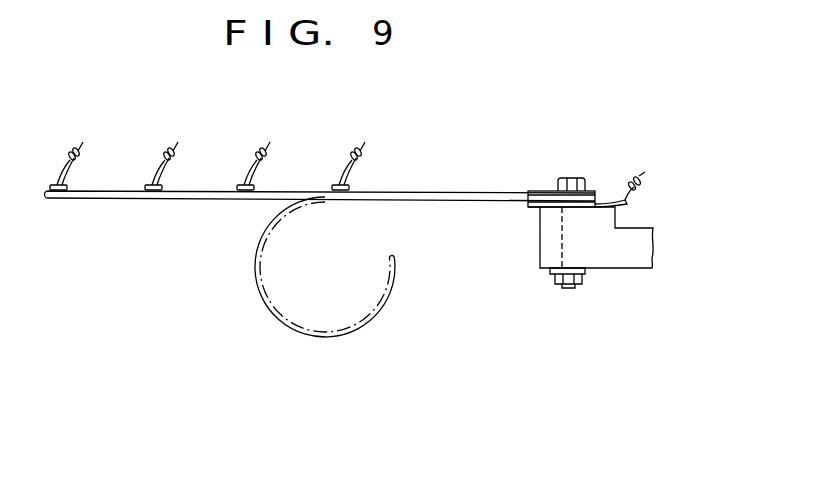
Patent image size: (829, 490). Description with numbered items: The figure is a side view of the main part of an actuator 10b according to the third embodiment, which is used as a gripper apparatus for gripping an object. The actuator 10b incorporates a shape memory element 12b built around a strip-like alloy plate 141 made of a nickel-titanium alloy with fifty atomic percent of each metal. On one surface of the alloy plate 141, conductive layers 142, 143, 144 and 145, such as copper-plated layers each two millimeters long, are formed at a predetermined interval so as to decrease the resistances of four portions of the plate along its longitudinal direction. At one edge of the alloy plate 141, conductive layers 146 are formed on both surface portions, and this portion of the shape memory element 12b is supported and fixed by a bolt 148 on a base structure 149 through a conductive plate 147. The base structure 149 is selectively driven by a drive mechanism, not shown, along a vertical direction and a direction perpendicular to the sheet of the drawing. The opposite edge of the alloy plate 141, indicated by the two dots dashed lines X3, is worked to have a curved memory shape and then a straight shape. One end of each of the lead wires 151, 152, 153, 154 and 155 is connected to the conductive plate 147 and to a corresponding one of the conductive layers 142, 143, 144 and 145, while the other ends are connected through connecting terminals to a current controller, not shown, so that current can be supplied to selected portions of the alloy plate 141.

The actuator 10b is at (482, 132).
The shape memory element 12b is at (455, 190).
The alloy plate 141 is at (176, 202).
The conductive layer 142 is at (349, 184).
The conductive layer 143 is at (254, 184).
The conductive layer 144 is at (162, 184).
The conductive layer 145 is at (67, 184).
The conductive layers 146 is at (590, 188).
The conductive plate 147 is at (628, 203).
The bolt 148 is at (573, 176).
The base structure 149 is at (627, 258).
The lead wire 151 is at (645, 172).
The lead wire 152 is at (366, 142).
The lead wire 153 is at (271, 142).
The lead wire 154 is at (179, 142).
The lead wire 155 is at (84, 142).
The two dots dashed lines X3 is at (395, 296).